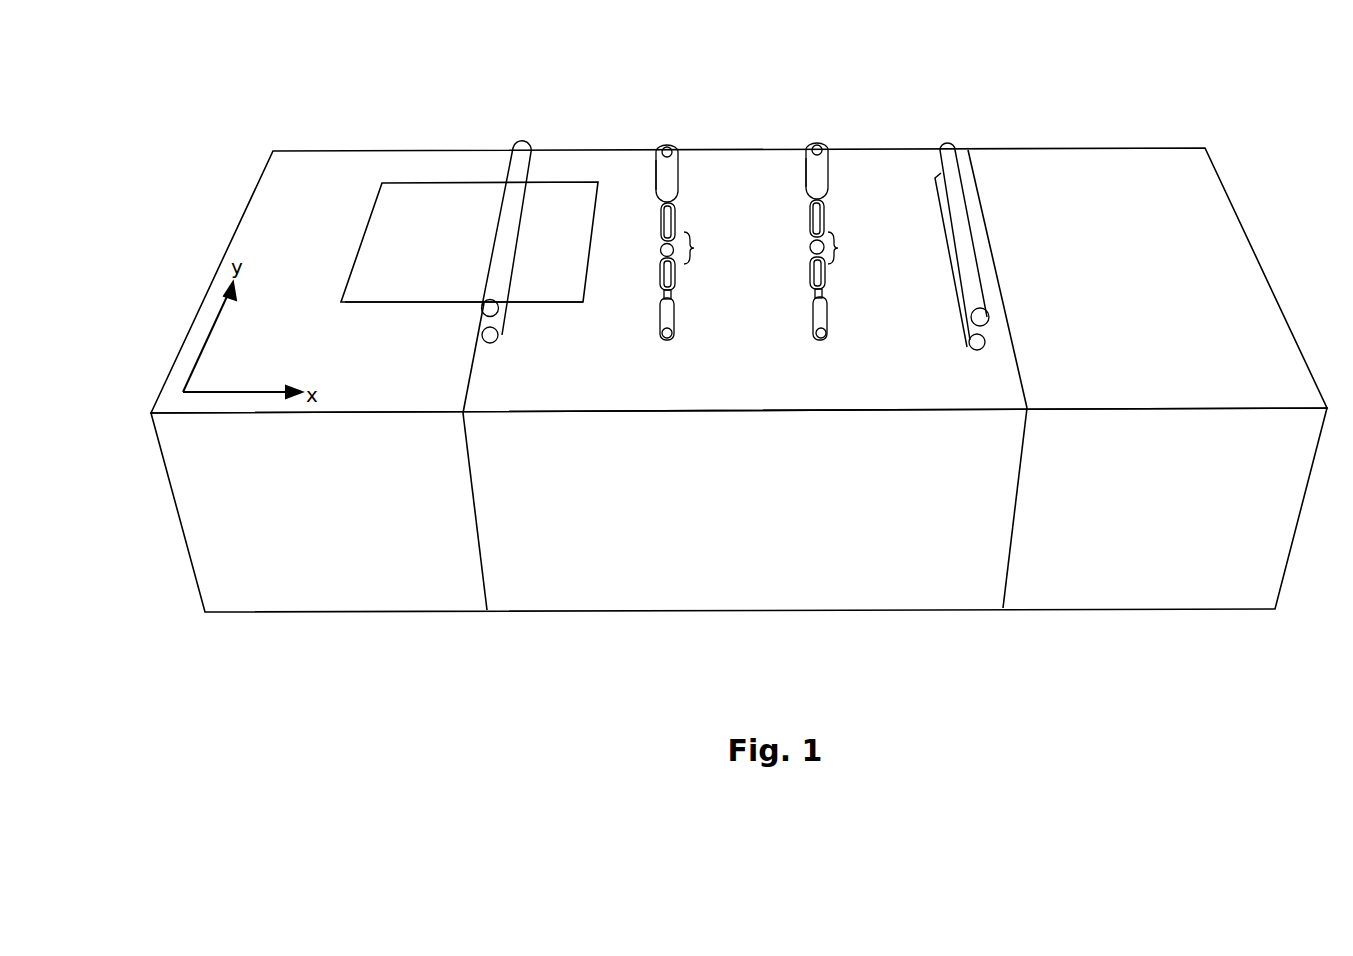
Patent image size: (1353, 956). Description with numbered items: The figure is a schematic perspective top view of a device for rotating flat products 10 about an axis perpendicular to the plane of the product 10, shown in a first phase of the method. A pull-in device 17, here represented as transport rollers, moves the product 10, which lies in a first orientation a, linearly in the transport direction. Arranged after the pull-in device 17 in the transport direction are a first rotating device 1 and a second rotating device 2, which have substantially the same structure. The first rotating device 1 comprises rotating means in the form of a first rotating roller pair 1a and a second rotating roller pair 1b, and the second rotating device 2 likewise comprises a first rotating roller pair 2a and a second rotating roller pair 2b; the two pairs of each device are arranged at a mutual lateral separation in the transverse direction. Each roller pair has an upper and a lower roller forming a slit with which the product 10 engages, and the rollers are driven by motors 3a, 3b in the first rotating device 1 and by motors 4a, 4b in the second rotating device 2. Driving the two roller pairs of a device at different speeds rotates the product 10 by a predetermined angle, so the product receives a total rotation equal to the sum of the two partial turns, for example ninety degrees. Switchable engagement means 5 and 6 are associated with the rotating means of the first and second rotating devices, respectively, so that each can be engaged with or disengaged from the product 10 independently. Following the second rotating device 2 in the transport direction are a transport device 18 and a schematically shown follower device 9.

The first rotating device 1 is at (675, 272).
The second rotating device 2 is at (822, 272).
The motor 3a is at (680, 168).
The motor 3b is at (658, 313).
The motor 4a is at (808, 202).
The motor 4b is at (812, 312).
The switchable engagement means 5 is at (666, 147).
The switchable engagement means 6 is at (818, 146).
The follower device 9 is at (1121, 277).
The flat product 10 is at (405, 264).
The pull-in device 17 is at (537, 160).
The transport device 18 is at (964, 160).
The first rotating roller pair 1a is at (678, 220).
The second rotating roller pair 1b is at (658, 260).
The first rotating roller pair 2a is at (824, 222).
The second rotating roller pair 2b is at (825, 263).
The first orientation a is at (397, 287).